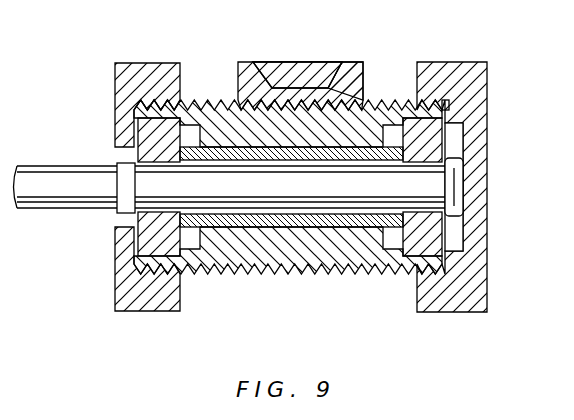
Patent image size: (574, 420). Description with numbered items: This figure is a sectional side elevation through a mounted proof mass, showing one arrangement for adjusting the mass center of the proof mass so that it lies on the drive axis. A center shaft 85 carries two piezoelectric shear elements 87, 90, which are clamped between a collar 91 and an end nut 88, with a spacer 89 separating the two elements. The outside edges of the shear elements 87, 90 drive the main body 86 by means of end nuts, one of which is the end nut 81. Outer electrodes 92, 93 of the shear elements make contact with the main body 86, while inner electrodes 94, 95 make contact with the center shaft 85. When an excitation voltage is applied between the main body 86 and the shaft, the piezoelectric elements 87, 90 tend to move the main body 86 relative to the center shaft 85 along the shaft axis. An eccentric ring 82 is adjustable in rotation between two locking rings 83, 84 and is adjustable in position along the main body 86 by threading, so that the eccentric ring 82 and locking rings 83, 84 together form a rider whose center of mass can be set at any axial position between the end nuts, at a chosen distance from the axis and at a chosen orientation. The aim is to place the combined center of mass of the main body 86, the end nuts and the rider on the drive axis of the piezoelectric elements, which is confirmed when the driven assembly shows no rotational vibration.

The end nut 81 is at (148, 70).
The eccentric ring 82 is at (312, 62).
The locking ring 83 is at (358, 62).
The locking ring 84 is at (240, 62).
The center shaft 85 is at (67, 193).
The main body 86 is at (389, 105).
The piezoelectric shear element 87 is at (420, 250).
The end nut 88 is at (459, 160).
The spacer 89 is at (250, 224).
The piezoelectric shear element 90 is at (145, 250).
The collar 91 is at (132, 215).
The outer electrode 92 is at (147, 117).
The outer electrode 93 is at (449, 100).
The inner electrode 94 is at (138, 162).
The inner electrode 95 is at (430, 172).